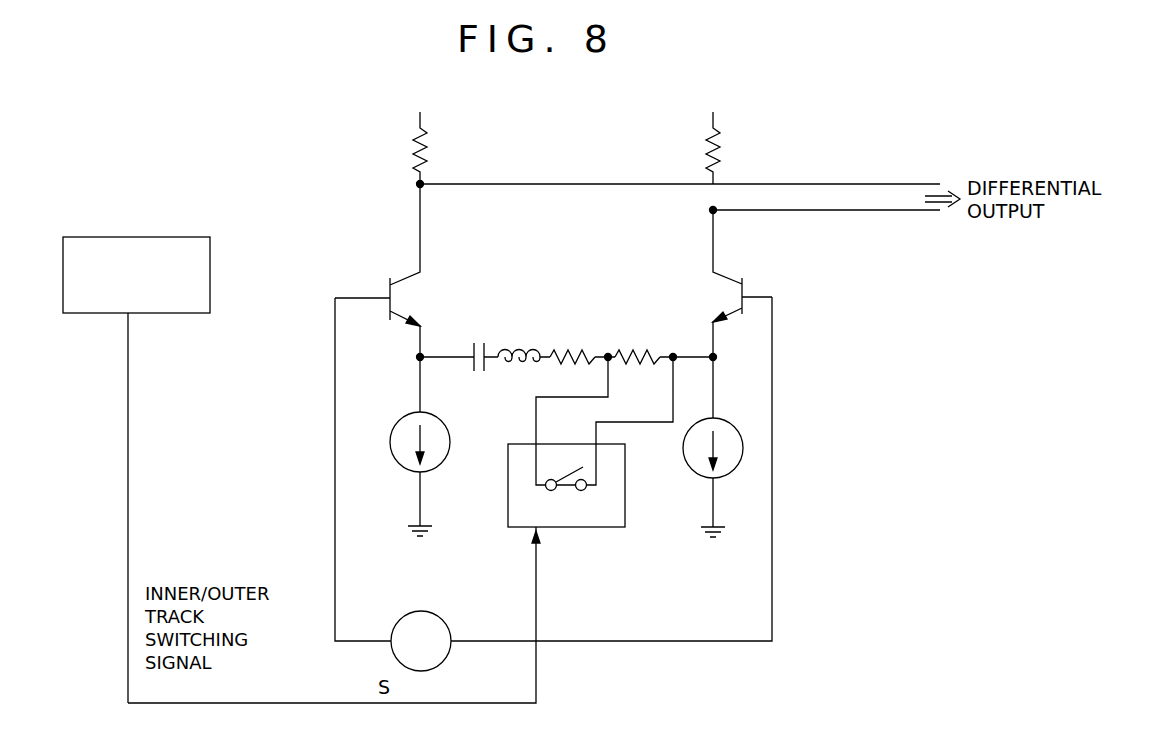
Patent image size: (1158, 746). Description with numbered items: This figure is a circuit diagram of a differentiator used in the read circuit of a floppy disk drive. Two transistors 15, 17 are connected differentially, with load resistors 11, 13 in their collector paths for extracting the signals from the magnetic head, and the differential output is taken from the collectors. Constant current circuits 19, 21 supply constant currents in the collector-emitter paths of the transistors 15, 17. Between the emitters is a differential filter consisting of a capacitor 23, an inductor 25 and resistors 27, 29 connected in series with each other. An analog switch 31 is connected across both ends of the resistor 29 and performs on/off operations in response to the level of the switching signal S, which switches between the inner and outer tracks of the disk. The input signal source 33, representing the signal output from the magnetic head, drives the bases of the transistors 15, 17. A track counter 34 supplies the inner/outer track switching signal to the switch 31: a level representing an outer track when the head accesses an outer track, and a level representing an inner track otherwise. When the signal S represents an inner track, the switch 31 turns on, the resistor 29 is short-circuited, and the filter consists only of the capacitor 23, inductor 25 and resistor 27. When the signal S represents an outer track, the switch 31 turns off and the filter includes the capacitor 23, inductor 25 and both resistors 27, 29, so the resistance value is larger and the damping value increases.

The load resistor 11 is at (413, 160).
The load resistor 13 is at (706, 160).
The transistor 15 is at (388, 299).
The transistor 17 is at (736, 298).
The constant current circuit 19 is at (408, 415).
The constant current circuit 21 is at (731, 420).
The capacitor 23 is at (480, 341).
The inductor 25 is at (528, 343).
The resistor 27 is at (570, 348).
The resistor 29 is at (638, 348).
The analog switch 31 is at (508, 470).
The input signal source 33 is at (410, 612).
The track counter 34 is at (211, 262).